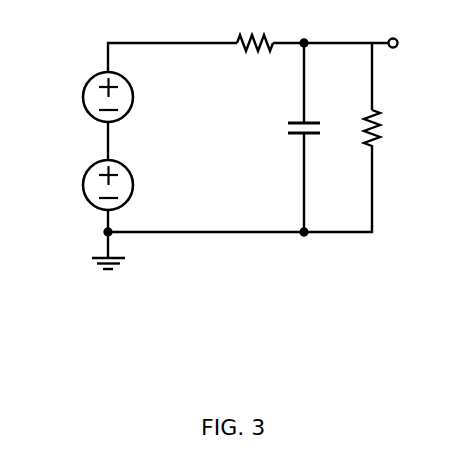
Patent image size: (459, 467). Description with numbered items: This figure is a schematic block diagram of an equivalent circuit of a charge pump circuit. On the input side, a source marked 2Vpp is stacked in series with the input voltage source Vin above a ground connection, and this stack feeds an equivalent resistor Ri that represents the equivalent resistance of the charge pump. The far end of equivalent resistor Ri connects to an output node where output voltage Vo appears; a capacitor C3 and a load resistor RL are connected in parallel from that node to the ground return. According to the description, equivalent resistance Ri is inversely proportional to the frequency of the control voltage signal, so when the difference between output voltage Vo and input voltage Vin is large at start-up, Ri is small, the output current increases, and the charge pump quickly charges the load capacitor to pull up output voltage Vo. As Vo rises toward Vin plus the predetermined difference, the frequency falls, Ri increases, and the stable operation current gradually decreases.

The 2Vpp voltage source 2Vpp is at (77, 97).
The input voltage Vin is at (83, 185).
The equivalent resistor Ri is at (255, 57).
The capacitor C3 is at (320, 130).
The load resistor RL is at (391, 128).
The output voltage Vo is at (377, 32).